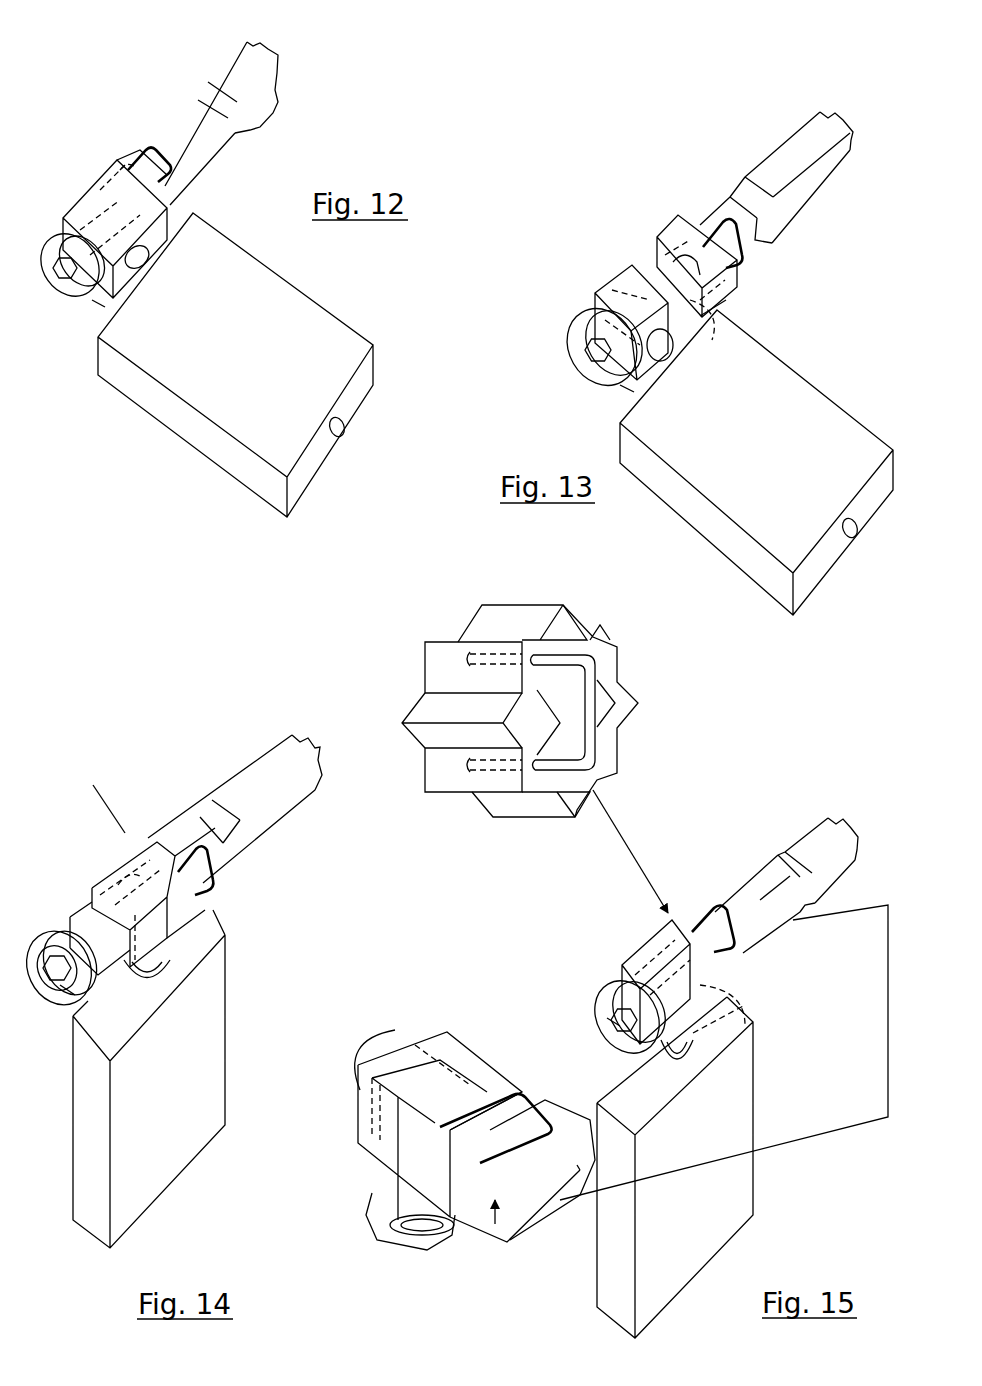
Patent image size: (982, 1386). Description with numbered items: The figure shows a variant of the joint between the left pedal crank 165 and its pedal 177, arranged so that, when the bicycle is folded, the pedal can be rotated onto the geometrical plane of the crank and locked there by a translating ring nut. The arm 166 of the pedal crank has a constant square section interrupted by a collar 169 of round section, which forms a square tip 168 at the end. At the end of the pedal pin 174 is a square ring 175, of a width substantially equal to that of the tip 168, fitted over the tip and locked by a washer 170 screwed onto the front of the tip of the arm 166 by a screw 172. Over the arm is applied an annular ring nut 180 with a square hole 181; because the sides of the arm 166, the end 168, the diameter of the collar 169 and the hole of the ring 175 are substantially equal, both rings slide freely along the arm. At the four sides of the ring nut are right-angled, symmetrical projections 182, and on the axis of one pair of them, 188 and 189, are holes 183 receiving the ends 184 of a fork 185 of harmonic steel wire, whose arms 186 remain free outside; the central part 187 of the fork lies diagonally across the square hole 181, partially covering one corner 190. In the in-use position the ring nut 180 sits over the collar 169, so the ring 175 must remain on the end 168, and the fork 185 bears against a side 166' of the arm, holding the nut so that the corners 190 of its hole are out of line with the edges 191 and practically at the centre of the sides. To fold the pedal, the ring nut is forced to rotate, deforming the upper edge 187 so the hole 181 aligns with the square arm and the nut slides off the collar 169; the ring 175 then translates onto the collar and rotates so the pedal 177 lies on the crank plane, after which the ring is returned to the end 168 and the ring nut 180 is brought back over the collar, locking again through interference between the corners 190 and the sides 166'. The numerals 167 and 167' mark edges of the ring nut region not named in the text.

In FIG. 12, the left pedal crank 165 is at (293, 137).
In FIG. 13, the left pedal crank 165 is at (877, 107).
In FIG. 14, the left pedal crank 165 is at (290, 727).
In FIG. 12, the arm of the pedal crank 166 is at (223, 123).
In FIG. 14, the arm of the pedal crank 166 is at (235, 807).
In FIG. 15, the arm of the pedal crank 166 is at (676, 1065).
In FIG. 12, the side of the pedal crank arm 166' is at (196, 93).
In FIG. 13, the side of the pedal crank arm 166' is at (773, 168).
In FIG. 15, the side of the pedal crank arm 166' is at (761, 859).
In FIG. 13, the edge of clamp block 167 is at (752, 311).
In FIG. 13, the hidden edge of clamp block 167' is at (728, 334).
In FIG. 12, the tip of the pedal crank arm 168 is at (80, 190).
In FIG. 13, the tip of the pedal crank arm 168 is at (630, 287).
In FIG. 14, the tip of the pedal crank arm 168 is at (88, 918).
In FIG. 15, the tip of the pedal crank arm 168 is at (693, 1033).
In FIG. 12, the collar 169 is at (125, 150).
In FIG. 13, the collar 169 is at (650, 247).
In FIG. 14, the collar 169 is at (145, 860).
In FIG. 15, the collar 169 is at (727, 977).
In FIG. 12, the washer 170 is at (52, 293).
In FIG. 13, the washer 170 is at (595, 377).
In FIG. 14, the washer 170 is at (75, 990).
In FIG. 15, the washer 170 is at (603, 1033).
In FIG. 12, the screw 172 is at (97, 297).
In FIG. 13, the screw 172 is at (627, 380).
In FIG. 14, the screw 172 is at (48, 980).
In FIG. 15, the screw 172 is at (607, 1018).
In FIG. 12, the pedal pin 174 is at (145, 260).
In FIG. 13, the pedal pin 174 is at (667, 352).
In FIG. 14, the pedal pin 174 is at (150, 978).
In FIG. 15, the pedal pin 174 is at (688, 1080).
In FIG. 12, the square ring 175 is at (67, 212).
In FIG. 13, the square ring 175 is at (623, 263).
In FIG. 14, the square ring 175 is at (163, 940).
In FIG. 15, the square ring 175 is at (635, 960).
In FIG. 12, the pedal 177 is at (320, 342).
In FIG. 13, the pedal 177 is at (837, 445).
In FIG. 14, the pedal 177 is at (200, 1092).
In FIG. 15, the pedal 177 is at (737, 1187).
In FIG. 12, the annular ring nut 180 is at (167, 217).
In FIG. 14, the annular ring nut 180 is at (190, 913).
In FIG. 15, the annular ring nut 180 is at (655, 897).
In FIG. 15, the square hole 181 is at (487, 1112).
In FIG. 15, the right-angled projections 182 is at (620, 667).
In FIG. 15, the holes 183 is at (427, 773).
In FIG. 15, the ends of the fork 184 is at (480, 797).
In FIG. 12, the fork 185 is at (168, 170).
In FIG. 13, the fork 185 is at (747, 258).
In FIG. 14, the fork 185 is at (212, 865).
In FIG. 15, the fork 185 is at (550, 1143).
In FIG. 15, the arms of the fork 186 is at (567, 767).
In FIG. 15, the central part of the fork 187 is at (725, 910).
In FIG. 15, the projection 188 is at (443, 675).
In FIG. 15, the projection 189 is at (443, 760).
In FIG. 15, the corner of the square hole 190 is at (537, 727).
In FIG. 15, the edges of the pedal crank arm 191 is at (505, 1123).